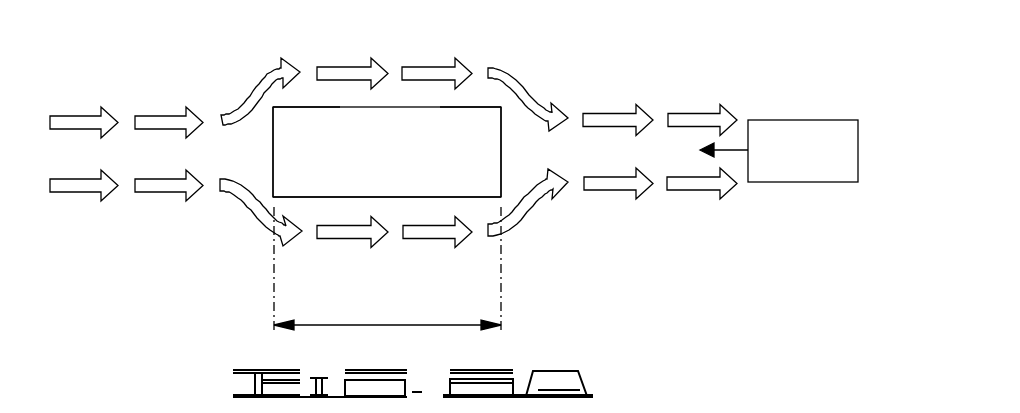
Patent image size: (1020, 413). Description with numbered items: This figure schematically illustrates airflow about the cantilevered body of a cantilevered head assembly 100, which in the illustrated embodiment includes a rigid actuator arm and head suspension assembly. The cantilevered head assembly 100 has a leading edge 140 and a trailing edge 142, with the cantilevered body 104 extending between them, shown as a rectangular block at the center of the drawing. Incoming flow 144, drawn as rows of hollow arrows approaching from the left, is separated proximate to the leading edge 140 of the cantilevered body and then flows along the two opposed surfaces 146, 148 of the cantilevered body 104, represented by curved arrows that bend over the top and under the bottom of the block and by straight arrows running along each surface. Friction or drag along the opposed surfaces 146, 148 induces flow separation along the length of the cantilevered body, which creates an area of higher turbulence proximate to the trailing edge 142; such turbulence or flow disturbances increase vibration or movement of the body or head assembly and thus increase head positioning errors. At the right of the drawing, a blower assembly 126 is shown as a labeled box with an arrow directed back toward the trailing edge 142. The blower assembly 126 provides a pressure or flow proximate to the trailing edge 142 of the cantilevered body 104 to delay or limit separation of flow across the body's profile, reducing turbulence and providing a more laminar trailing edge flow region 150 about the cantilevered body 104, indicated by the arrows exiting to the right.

The cantilevered head assembly 100 is at (385, 103).
The cantilevered body 104 is at (320, 107).
The blower assembly 126 is at (807, 182).
The leading edge 140 is at (275, 157).
The trailing edge 142 is at (501, 158).
The flow 144 is at (165, 114).
The opposed surface 146 is at (473, 100).
The opposed surface 148 is at (402, 197).
The laminar trailing edge flow region 150 is at (687, 113).